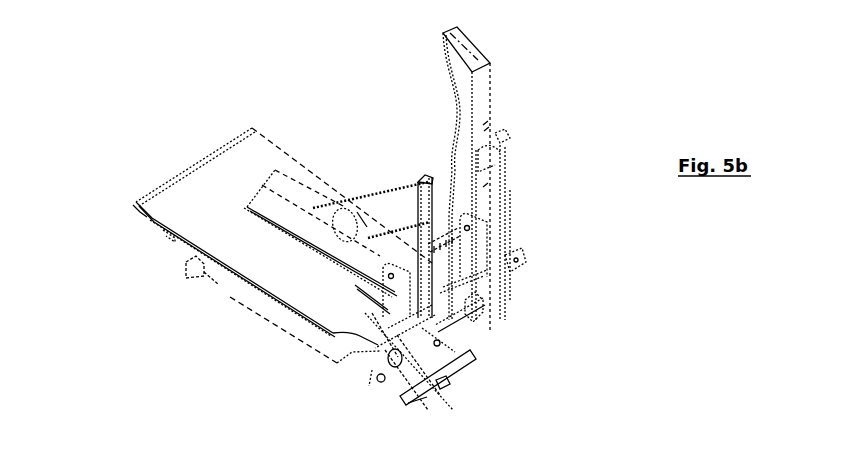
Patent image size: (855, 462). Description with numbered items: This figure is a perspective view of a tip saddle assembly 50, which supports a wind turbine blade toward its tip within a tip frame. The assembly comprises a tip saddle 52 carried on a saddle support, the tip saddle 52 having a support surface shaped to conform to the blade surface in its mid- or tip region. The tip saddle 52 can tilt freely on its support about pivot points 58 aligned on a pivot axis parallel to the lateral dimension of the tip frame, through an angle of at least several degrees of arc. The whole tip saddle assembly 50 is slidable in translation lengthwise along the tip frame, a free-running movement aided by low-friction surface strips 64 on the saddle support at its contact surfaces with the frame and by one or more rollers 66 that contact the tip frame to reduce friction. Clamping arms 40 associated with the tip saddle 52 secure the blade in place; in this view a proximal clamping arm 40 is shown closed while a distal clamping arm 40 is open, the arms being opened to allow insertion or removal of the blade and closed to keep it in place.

The tip saddle assembly 50 is at (168, 68).
The tip saddle 52 is at (172, 199).
The clamping arm 40 is at (483, 97).
The pivot point 58 is at (438, 345).
The low-friction surface strip 64 is at (437, 383).
The roller 66 is at (380, 382).